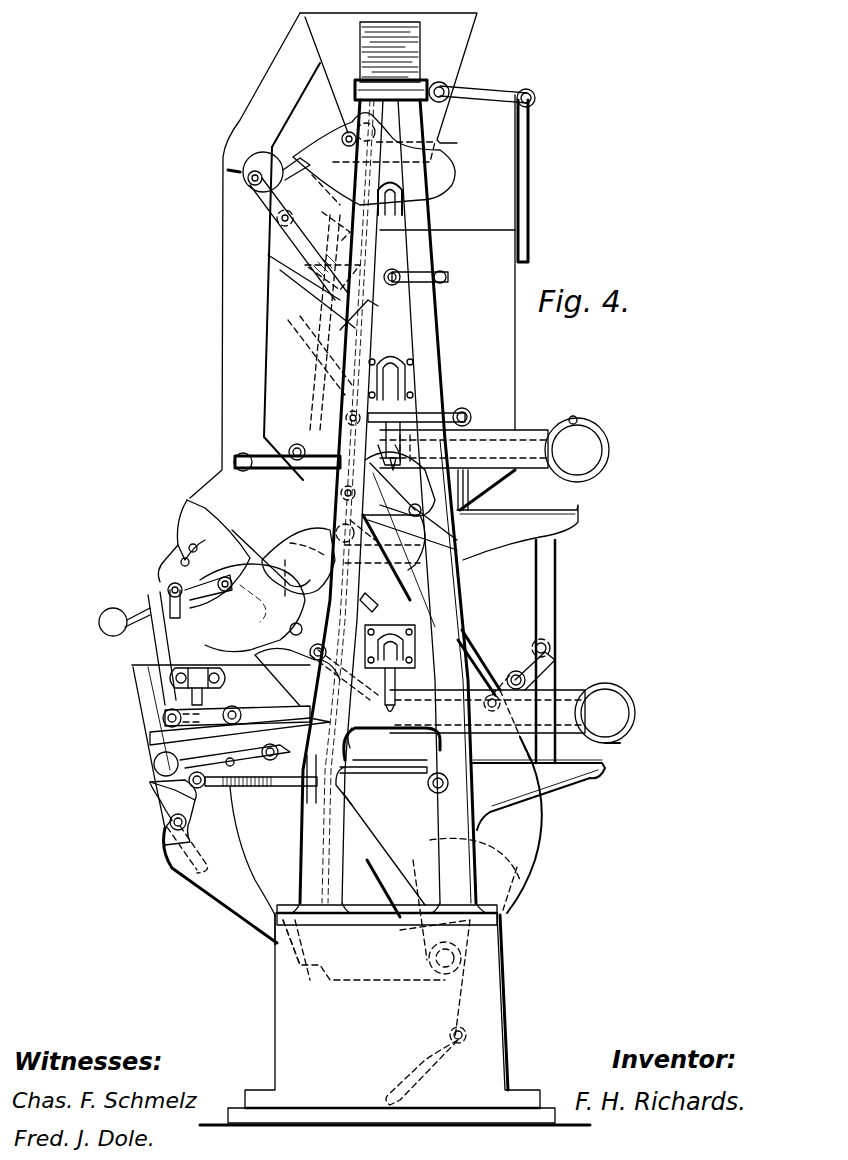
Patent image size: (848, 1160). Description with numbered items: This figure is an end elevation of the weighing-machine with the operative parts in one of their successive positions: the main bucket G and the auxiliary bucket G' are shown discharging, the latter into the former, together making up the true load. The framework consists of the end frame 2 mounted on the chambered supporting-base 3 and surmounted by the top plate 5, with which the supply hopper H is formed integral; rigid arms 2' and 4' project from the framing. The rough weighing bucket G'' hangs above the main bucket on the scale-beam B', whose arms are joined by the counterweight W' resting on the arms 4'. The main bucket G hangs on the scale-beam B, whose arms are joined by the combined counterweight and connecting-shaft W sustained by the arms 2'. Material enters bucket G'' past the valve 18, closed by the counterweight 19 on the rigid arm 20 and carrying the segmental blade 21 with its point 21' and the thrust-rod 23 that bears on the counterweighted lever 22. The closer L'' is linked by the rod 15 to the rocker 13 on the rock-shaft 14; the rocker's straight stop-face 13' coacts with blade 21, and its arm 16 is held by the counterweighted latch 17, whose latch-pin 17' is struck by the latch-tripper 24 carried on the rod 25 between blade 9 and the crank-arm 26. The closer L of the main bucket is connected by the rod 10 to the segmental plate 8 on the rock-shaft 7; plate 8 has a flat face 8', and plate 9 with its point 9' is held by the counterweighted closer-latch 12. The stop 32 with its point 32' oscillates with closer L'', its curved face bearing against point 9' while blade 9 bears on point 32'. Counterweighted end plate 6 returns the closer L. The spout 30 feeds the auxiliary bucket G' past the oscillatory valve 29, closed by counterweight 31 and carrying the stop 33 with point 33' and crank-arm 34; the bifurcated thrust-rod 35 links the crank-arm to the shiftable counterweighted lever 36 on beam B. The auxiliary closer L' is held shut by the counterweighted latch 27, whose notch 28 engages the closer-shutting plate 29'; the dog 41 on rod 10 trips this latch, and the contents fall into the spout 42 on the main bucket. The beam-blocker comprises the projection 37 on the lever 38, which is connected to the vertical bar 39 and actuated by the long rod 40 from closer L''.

The end frame 2 is at (390, 506).
The rigid arms 2' is at (542, 795).
The chambered supporting-base 3 is at (492, 1040).
The rigid arms 4' is at (528, 532).
The top plate 5 is at (416, 56).
The counterweighted end plate 6 is at (532, 885).
The transverse rock-shaft 7 is at (290, 630).
The segmental plate 8 is at (252, 608).
The flat face 8' is at (197, 670).
The segmental plate 9 is at (279, 558).
The point 9' is at (290, 567).
The rod 10 is at (268, 676).
The counterweighted closer-latch 12 is at (280, 780).
The rocker 13 is at (287, 235).
The straight stop-face 13' is at (326, 180).
The transverse rock-shaft 14 is at (290, 210).
The rod 15 is at (350, 320).
The arm 16 is at (342, 296).
The counterweighted latch 17 is at (422, 261).
The latch-pin 17' is at (351, 315).
The valve 18 is at (327, 153).
The counterweight 19 is at (258, 158).
The rigid arm 20 is at (290, 162).
The segmental blade 21 is at (421, 201).
The point 21' is at (384, 139).
The counterweighted lever 22 is at (318, 445).
The thrust-rod 23 is at (305, 380).
The latch-tripper 24 is at (310, 250).
The rod 25 is at (355, 340).
The crank-arm 26 is at (330, 218).
The counterweighted latch 27 is at (215, 765).
The notch 28 is at (165, 770).
The oscillatory valve 29 is at (200, 598).
The counterweighted closer-shutting plate 29' is at (154, 812).
The spout 30 is at (242, 405).
The counterweight 31 is at (100, 625).
The stop 32 is at (396, 539).
The point 32' is at (370, 566).
The stop 33 is at (204, 547).
The point 33' is at (295, 548).
The crank-arm 34 is at (168, 590).
The bifurcated thrust-rod 35 is at (155, 645).
The shiftable counterweighted lever 36 is at (315, 690).
The projection 37 is at (525, 677).
The lever 38 is at (545, 640).
The vertical bar 39 is at (548, 596).
The rod 40 is at (485, 662).
The dog 41 is at (298, 800).
The spout 42 is at (215, 888).
The supply chute or hopper H is at (462, 48).
The main bucket G is at (453, 801).
The auxiliary bucket G' is at (209, 746).
The rough weighing bucket or meter G'' is at (463, 262).
The scale-beam B is at (464, 692).
The scale-beam B' is at (466, 432).
The combined counterweight and connecting-shaft W is at (615, 713).
The counterweight W' is at (597, 449).
The closer L is at (376, 1012).
The closer L' is at (168, 848).
The closer L'' is at (441, 509).